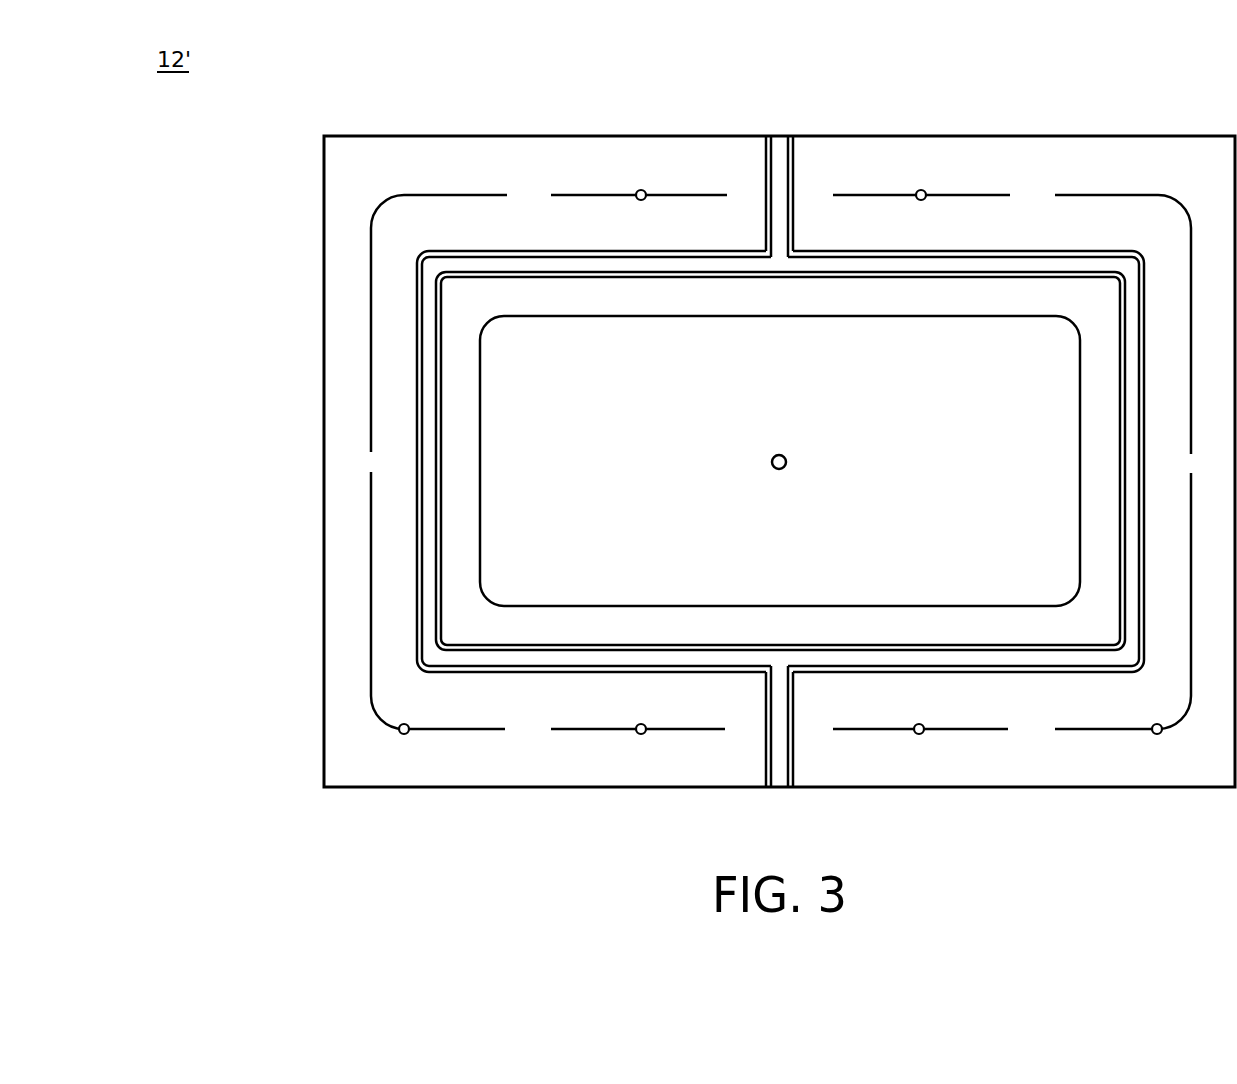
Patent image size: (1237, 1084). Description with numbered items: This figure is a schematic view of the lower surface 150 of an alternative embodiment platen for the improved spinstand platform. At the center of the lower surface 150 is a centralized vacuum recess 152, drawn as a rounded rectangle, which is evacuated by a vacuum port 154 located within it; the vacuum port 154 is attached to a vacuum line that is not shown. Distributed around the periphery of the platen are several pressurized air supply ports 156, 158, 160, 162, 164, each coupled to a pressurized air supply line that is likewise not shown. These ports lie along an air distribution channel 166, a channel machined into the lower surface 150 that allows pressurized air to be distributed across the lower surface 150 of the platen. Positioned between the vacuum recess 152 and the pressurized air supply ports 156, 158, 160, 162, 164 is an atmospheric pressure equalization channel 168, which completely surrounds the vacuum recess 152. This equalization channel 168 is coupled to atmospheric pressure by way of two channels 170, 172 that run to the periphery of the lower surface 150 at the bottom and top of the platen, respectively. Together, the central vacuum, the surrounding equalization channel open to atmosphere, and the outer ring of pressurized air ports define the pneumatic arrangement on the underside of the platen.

The lower surface 150 is at (341, 758).
The vacuum recess 152 is at (535, 460).
The vacuum port 154 is at (771, 461).
The pressurized air supply port 156 is at (404, 734).
The pressurized air supply port 158 is at (919, 734).
The pressurized air supply port 160 is at (1157, 734).
The pressurized air supply port 162 is at (641, 190).
The pressurized air supply port 164 is at (921, 190).
The air distribution channel 166 is at (452, 729).
The atmospheric pressure equalization channel 168 is at (425, 606).
The channel 170 is at (778, 773).
The channel 172 is at (781, 150).